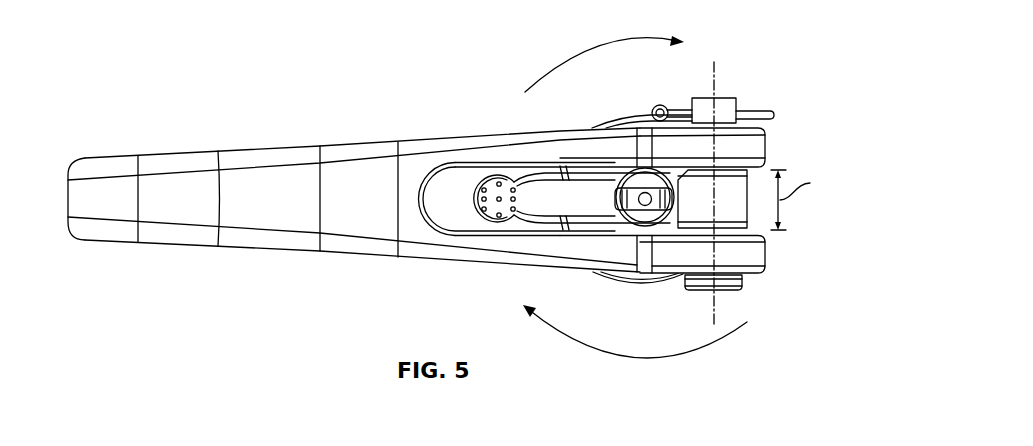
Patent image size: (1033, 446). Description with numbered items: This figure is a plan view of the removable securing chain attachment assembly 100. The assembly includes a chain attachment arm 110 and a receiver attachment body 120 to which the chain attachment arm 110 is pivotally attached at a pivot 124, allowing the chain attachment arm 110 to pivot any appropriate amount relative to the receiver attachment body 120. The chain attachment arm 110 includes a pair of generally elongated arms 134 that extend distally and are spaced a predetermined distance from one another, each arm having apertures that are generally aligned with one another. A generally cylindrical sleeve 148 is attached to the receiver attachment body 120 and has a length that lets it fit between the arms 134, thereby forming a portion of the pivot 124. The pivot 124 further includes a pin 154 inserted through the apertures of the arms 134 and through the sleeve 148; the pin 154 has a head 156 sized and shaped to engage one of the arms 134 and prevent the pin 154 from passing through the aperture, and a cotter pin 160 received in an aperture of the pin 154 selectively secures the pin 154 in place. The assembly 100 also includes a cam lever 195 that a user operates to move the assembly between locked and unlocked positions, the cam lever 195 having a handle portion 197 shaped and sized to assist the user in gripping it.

The removable securing chain attachment assembly 100 is at (126, 90).
The chain attachment arm 110 is at (172, 156).
The receiver attachment body 120 is at (610, 121).
The pivot 124 is at (717, 72).
The arms 134 is at (757, 147).
The sleeve 148 is at (752, 220).
The pin 154 is at (725, 100).
The head 156 is at (740, 280).
The cotter pin 160 is at (773, 109).
The cam lever 195 is at (598, 207).
The handle portion 197 is at (490, 212).